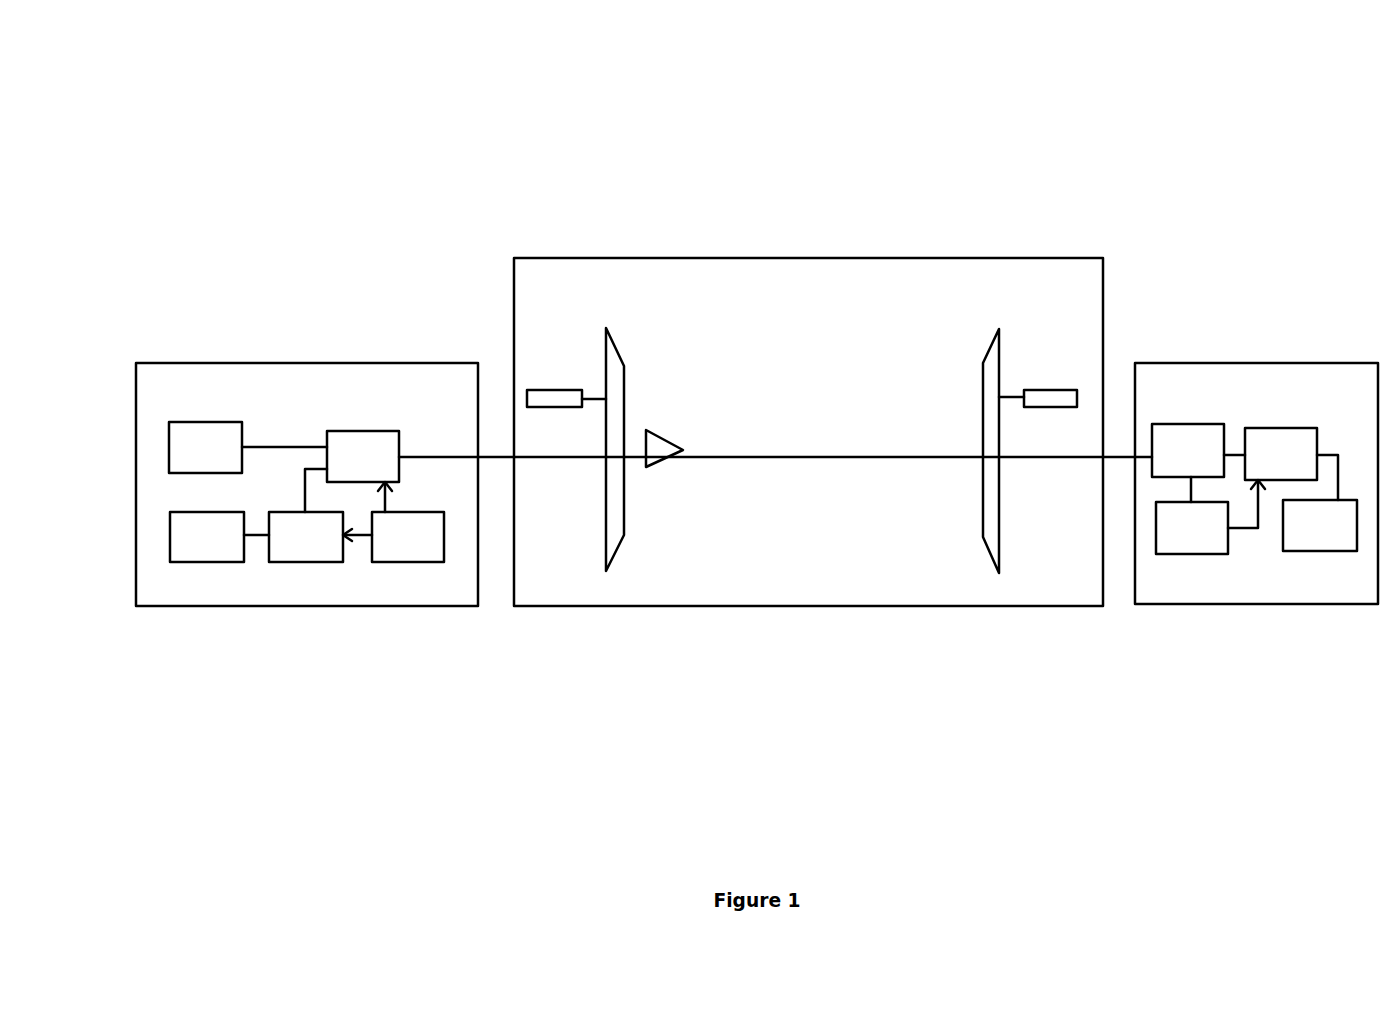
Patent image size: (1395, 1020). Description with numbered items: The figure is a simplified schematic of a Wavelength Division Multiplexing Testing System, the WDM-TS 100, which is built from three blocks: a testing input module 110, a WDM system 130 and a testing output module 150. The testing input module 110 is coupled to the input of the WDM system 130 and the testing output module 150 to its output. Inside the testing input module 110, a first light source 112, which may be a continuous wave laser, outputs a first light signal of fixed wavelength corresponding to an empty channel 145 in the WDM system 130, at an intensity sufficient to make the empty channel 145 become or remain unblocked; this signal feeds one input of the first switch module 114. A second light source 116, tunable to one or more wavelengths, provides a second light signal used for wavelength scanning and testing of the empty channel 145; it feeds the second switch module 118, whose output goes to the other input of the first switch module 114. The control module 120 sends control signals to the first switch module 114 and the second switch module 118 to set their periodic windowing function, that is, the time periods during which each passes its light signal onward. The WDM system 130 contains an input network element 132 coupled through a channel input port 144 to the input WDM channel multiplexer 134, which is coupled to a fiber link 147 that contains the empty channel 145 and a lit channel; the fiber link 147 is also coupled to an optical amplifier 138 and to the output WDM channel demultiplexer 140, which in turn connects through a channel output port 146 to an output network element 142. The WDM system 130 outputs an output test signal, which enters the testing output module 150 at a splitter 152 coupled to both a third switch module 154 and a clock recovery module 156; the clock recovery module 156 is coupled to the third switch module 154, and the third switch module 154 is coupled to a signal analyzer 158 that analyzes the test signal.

The Wavelength Division Multiplexing Testing System 100 is at (1062, 133).
The testing input module 110 is at (308, 363).
The first light source 112 is at (207, 422).
The first switch module 114 is at (363, 431).
The second light source 116 is at (207, 562).
The second switch module 118 is at (305, 562).
The control module 120 is at (413, 562).
The WDM system 130 is at (812, 258).
The input network element 132 is at (548, 390).
The input WDM channel multiplexer 134 is at (613, 345).
The optical amplifier 138 is at (663, 462).
The output WDM channel demultiplexer 140 is at (985, 345).
The output network element 142 is at (1052, 389).
The channel input port 144 is at (599, 395).
The empty channel 145 is at (552, 459).
The channel output port 146 is at (1013, 398).
The fiber link 147 is at (752, 457).
The testing output module 150 is at (1257, 363).
The splitter 152 is at (1191, 424).
The third switch module 154 is at (1280, 428).
The clock recovery module 156 is at (1192, 554).
The signal analyzer 158 is at (1320, 551).